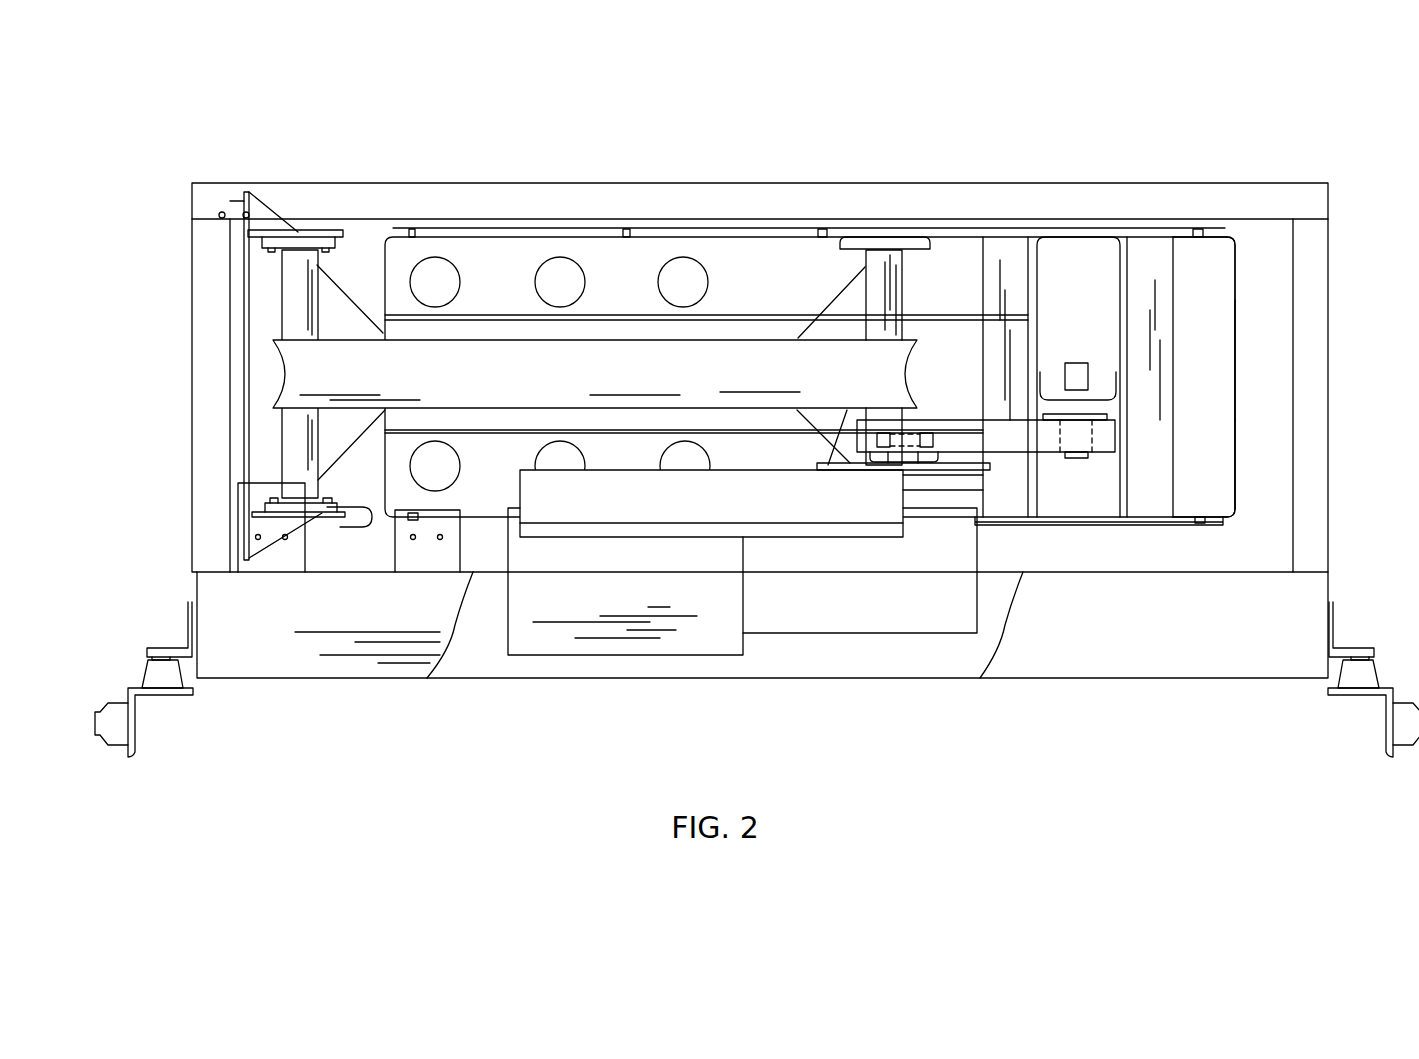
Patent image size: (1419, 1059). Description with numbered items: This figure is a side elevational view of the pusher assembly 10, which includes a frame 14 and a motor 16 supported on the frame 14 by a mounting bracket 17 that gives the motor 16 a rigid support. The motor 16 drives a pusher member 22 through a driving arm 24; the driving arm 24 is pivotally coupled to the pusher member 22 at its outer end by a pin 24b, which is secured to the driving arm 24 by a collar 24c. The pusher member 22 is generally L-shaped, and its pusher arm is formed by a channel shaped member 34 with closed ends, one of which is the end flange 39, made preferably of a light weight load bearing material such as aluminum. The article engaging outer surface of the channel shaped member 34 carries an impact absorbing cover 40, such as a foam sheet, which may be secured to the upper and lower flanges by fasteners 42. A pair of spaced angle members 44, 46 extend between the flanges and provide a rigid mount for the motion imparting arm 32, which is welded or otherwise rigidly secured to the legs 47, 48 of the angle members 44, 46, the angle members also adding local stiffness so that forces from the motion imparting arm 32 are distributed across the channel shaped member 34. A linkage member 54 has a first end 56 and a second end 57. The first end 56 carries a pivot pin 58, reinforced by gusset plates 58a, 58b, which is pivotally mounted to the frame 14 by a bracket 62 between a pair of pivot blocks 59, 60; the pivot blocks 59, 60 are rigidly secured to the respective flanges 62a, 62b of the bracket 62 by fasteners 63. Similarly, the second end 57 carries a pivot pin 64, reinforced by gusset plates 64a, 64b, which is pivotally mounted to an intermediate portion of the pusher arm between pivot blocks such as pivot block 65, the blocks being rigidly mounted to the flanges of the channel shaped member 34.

The pusher assembly 10 is at (774, 136).
The frame 14 is at (1262, 180).
The motor 16 is at (525, 642).
The mounting bracket 17 is at (763, 523).
The pusher member 22 is at (499, 222).
The driving arm 24 is at (1003, 438).
The pin 24b is at (1075, 362).
The collar 24c is at (1100, 458).
The motion imparting arm 32 is at (1105, 385).
The channel shaped member 34 is at (1248, 445).
The end flange 39 is at (1237, 372).
The impact absorbing cover 40 is at (663, 228).
The fasteners 42 is at (622, 230).
The angle member 44 is at (997, 250).
The angle member 46 is at (1143, 250).
The leg 47 is at (1043, 250).
The leg 48 is at (1128, 495).
The linkage member 54 is at (683, 337).
The first end 56 is at (340, 338).
The second end 57 is at (847, 412).
The pivot pin 58 is at (282, 435).
The gusset plate 58a is at (385, 290).
The gusset plate 58b is at (350, 430).
The pivot block 59 is at (250, 240).
The pivot block 60 is at (250, 507).
The bracket 62 is at (236, 318).
The flange 62a is at (268, 238).
The flange 62b is at (327, 522).
The fasteners 63 is at (352, 232).
The pivot pin 64 is at (905, 290).
The gusset plate 64a is at (853, 278).
The gusset plate 64b is at (828, 430).
The pivot block 65 is at (860, 248).